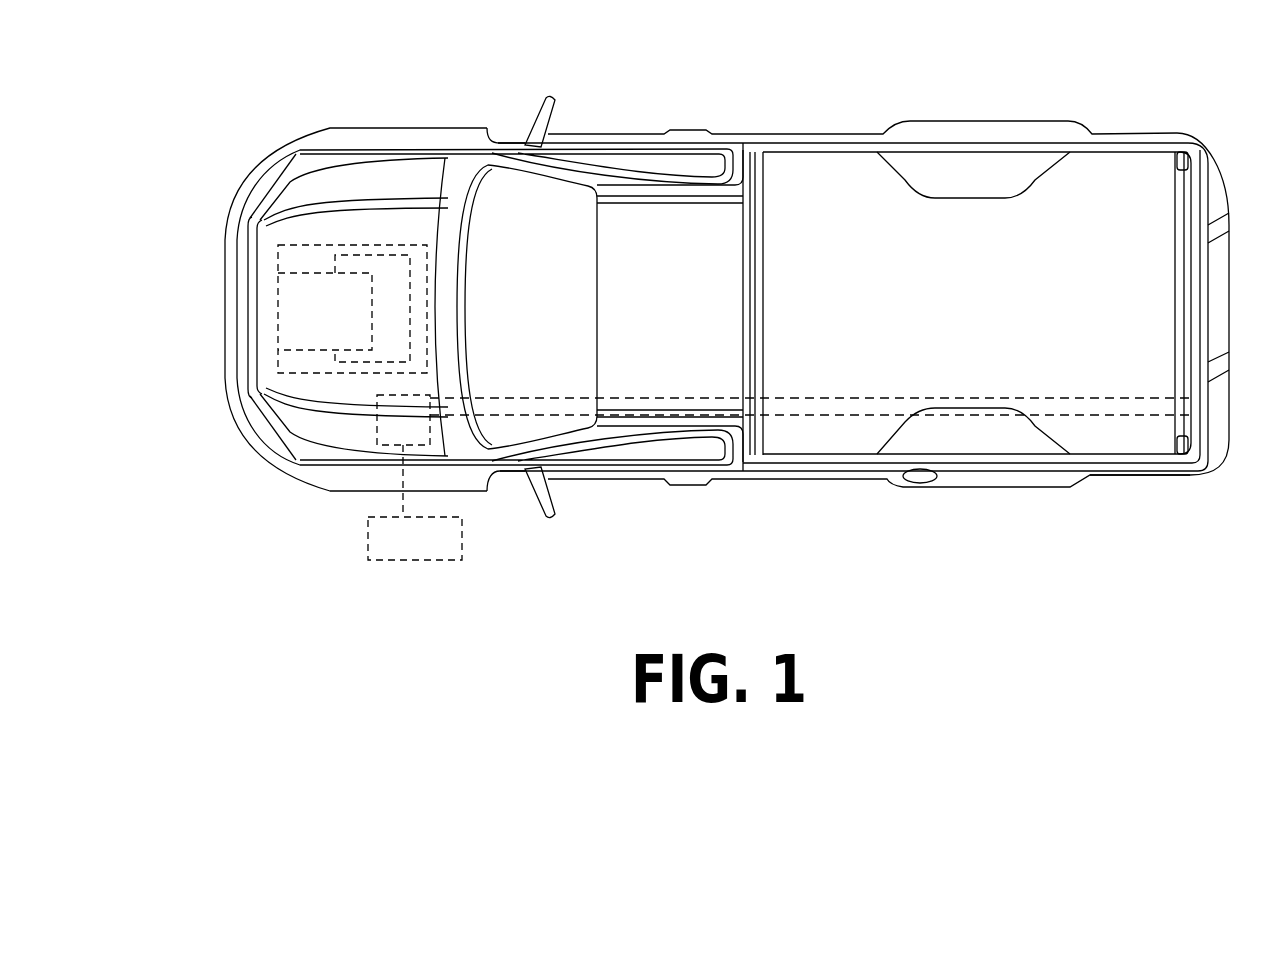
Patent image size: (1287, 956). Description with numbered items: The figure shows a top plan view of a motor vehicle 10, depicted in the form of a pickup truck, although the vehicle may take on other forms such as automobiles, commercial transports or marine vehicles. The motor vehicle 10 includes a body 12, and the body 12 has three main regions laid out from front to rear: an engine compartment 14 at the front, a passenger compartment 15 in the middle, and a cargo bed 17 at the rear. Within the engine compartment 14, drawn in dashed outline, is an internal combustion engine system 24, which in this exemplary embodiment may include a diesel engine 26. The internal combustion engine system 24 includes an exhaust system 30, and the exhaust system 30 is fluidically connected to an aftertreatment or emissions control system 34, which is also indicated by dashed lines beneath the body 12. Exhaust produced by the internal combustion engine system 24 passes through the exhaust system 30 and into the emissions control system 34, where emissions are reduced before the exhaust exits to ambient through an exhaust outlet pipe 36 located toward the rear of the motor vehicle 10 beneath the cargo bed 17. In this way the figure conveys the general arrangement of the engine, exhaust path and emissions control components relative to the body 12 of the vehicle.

The motor vehicle 10 is at (1002, 530).
The body 12 is at (798, 482).
The engine compartment 14 is at (378, 198).
The passenger compartment 15 is at (550, 217).
The cargo bed 17 is at (840, 200).
The internal combustion engine system 24 is at (318, 320).
The diesel engine 26 is at (300, 263).
The exhaust system 30 is at (318, 384).
The emissions control system 34 is at (367, 433).
The exhaust outlet pipe 36 is at (1107, 422).